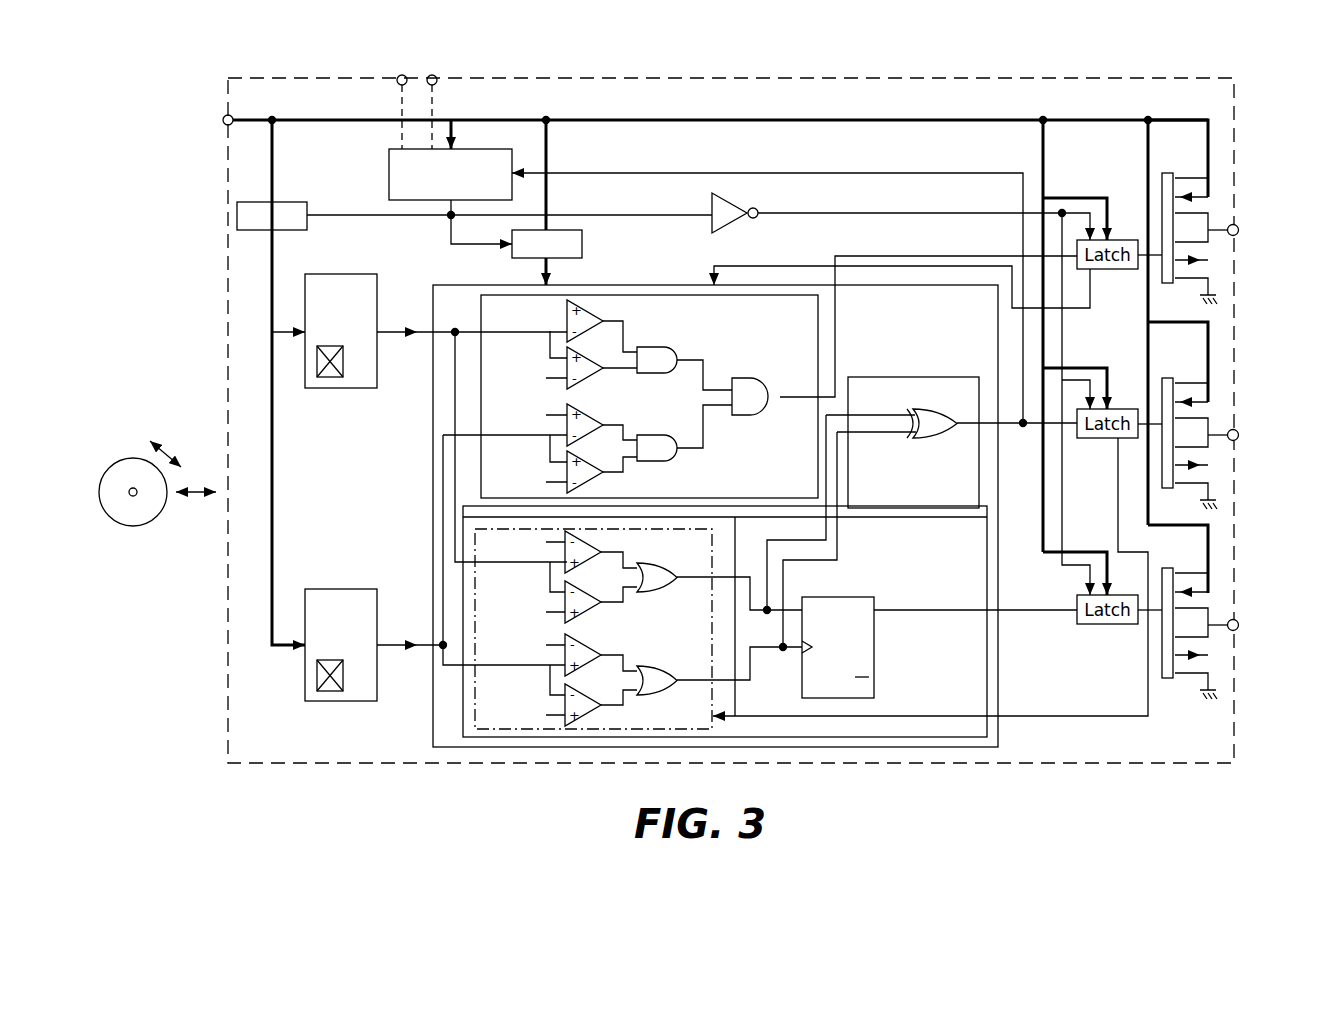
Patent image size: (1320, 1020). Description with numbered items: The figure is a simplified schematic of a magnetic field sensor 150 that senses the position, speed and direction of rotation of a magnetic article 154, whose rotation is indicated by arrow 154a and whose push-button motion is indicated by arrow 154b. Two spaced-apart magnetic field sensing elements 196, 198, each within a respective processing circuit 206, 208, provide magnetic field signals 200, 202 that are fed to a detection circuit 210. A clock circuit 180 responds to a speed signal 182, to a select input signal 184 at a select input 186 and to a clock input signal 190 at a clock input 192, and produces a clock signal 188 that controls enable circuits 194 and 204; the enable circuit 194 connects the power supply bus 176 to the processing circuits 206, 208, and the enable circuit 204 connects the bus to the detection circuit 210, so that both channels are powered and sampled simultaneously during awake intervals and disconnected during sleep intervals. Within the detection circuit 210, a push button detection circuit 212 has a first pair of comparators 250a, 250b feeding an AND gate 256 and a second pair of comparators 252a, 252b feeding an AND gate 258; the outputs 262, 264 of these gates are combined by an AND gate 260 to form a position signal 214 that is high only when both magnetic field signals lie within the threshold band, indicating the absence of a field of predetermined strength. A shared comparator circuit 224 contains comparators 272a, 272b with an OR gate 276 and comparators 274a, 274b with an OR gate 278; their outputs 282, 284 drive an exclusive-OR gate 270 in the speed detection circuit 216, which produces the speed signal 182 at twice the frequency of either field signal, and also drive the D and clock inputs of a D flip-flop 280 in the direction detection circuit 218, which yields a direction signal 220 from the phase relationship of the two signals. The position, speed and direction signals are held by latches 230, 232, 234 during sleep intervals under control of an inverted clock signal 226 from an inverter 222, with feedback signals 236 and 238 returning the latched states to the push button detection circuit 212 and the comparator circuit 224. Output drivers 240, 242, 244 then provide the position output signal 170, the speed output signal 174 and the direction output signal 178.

The magnetic field sensor 150 is at (1115, 78).
The magnetic article 154 is at (118, 458).
The rotation arrow 154a is at (168, 455).
The push axis arrow 154b is at (195, 496).
The position output signal 170 is at (1225, 224).
The speed output signal 174 is at (1225, 430).
The power supply bus 176 is at (252, 120).
The direction output signal 178 is at (1225, 621).
The clock circuit 180 is at (389, 172).
The speed signal 182 is at (1010, 440).
The select input signal 184 is at (402, 104).
The select input 186 is at (371, 57).
The clock signal 188 is at (451, 234).
The clock input signal 190 is at (432, 104).
The clock input 192 is at (459, 57).
The enable circuit 194 is at (282, 202).
The magnetic field sensing element 196 is at (333, 346).
The magnetic field sensing element 198 is at (333, 660).
The magnetic field signal 200 is at (395, 325).
The magnetic field signal 202 is at (395, 638).
The enable circuit 204 is at (582, 244).
The processing circuit 206 is at (315, 274).
The processing circuit 208 is at (315, 589).
The detection circuit 210 is at (635, 285).
The push button detection circuit 212 is at (649, 396).
The position signal 214 is at (835, 350).
The speed detection circuit 216 is at (895, 377).
The direction detection circuit 218 is at (988, 580).
The direction signal 220 is at (1000, 612).
The inverter 222 is at (740, 200).
The comparator circuit 224 is at (713, 693).
The inverted clock signal 226 is at (805, 213).
The latch 230 is at (1108, 269).
The latch 232 is at (1110, 438).
The latch 234 is at (1108, 624).
The feedback signal 236 is at (768, 266).
The feedback signal 238 is at (1010, 717).
The output driver 240 is at (1167, 173).
The output driver 242 is at (1167, 378).
The output driver 244 is at (1167, 568).
The comparator 250a is at (595, 314).
The comparator 250b is at (596, 377).
The comparator 252a is at (595, 418).
The comparator 252b is at (596, 481).
The AND gate 256 is at (637, 365).
The AND gate 258 is at (670, 462).
The AND gate 260 is at (750, 396).
The AND gate output line 262 is at (703, 365).
The AND gate output line 264 is at (703, 432).
The XOR gate 270 is at (920, 411).
The comparator 272a is at (593, 545).
The comparator 272b is at (594, 607).
The comparator 274a is at (593, 648).
The comparator 274b is at (594, 710).
The OR gate 276 is at (655, 565).
The OR gate 278 is at (655, 695).
The D flip-flop 280 is at (833, 597).
The OR gate output line 282 is at (700, 580).
The OR gate output line 284 is at (700, 680).